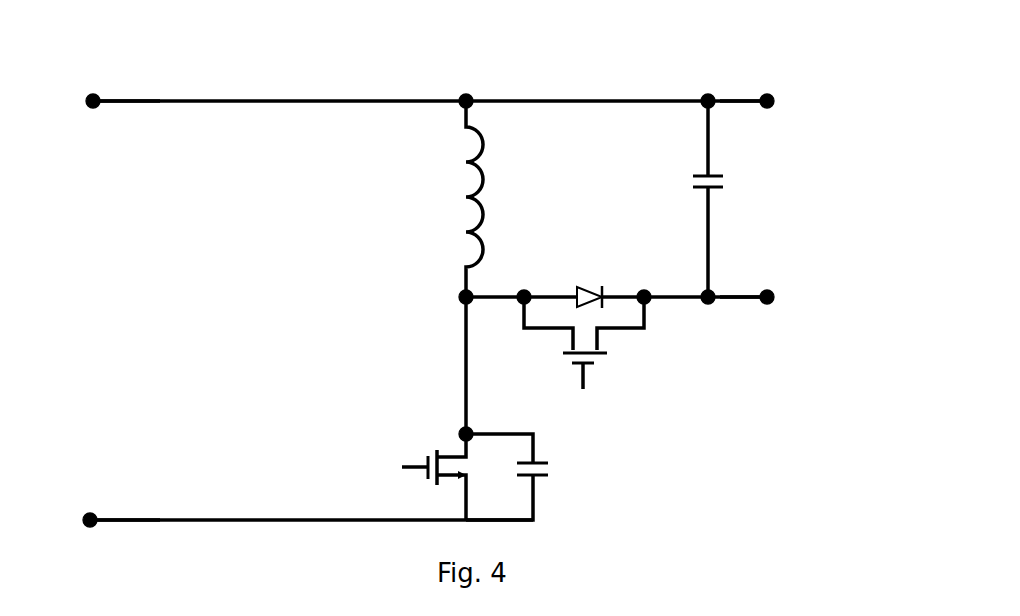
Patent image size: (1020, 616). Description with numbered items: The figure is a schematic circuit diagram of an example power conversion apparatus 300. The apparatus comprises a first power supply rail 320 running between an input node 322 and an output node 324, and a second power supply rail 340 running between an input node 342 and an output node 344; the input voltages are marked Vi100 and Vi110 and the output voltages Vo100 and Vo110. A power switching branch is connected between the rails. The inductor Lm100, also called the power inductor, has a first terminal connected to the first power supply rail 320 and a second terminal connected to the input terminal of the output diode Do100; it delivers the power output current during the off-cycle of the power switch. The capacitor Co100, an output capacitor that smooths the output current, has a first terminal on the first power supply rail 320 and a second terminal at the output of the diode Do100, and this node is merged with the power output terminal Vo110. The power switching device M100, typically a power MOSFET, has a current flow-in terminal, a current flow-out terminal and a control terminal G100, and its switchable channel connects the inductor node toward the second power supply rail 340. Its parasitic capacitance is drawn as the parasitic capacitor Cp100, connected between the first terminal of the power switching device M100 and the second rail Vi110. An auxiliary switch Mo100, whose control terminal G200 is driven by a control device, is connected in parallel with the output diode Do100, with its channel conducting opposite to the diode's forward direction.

The power conversion apparatus 300 is at (66, 36).
The first power supply rail 320 is at (578, 42).
The first input node 322 is at (100, 97).
The first output node 324 is at (772, 97).
The second power supply rail 340 is at (290, 566).
The second input node 342 is at (90, 527).
The second output node 344 is at (768, 305).
The inductor Lm100 is at (455, 200).
The output diode Do100 is at (588, 282).
The auxiliary switch Mo100 is at (623, 343).
The capacitor Co100 is at (735, 183).
The parasitic capacitor Cp100 is at (556, 467).
The power switching device M100 is at (440, 443).
The control terminal G100 is at (400, 467).
The control terminal G200 is at (584, 392).
The first input voltage Vi100 is at (152, 112).
The second power supply rail Vi110 is at (153, 516).
The first output voltage Vo100 is at (786, 103).
The output terminal Vo110 is at (787, 300).